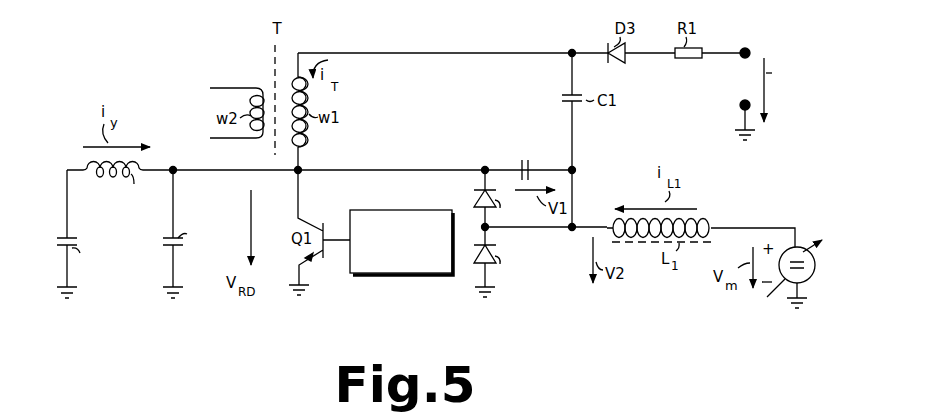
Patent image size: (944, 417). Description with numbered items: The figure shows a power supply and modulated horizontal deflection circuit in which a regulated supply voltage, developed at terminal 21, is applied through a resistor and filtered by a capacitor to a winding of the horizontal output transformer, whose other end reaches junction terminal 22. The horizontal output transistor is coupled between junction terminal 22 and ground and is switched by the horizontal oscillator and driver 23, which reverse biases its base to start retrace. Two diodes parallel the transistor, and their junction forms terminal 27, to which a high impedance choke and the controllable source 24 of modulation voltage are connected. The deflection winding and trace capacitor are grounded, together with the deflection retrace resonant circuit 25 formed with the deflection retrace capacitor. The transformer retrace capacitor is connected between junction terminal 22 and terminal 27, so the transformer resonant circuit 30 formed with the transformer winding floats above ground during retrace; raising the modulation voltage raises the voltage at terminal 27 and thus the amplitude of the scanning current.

The terminal 21 is at (746, 48).
The junction terminal 22 is at (302, 166).
The horizontal oscillator and driver 23 is at (430, 274).
The controllable source of direct voltage 24 is at (810, 284).
The deflection retrace resonant circuit 25 is at (130, 243).
The terminal 27 is at (575, 222).
The transformer resonant circuit 30 is at (455, 143).